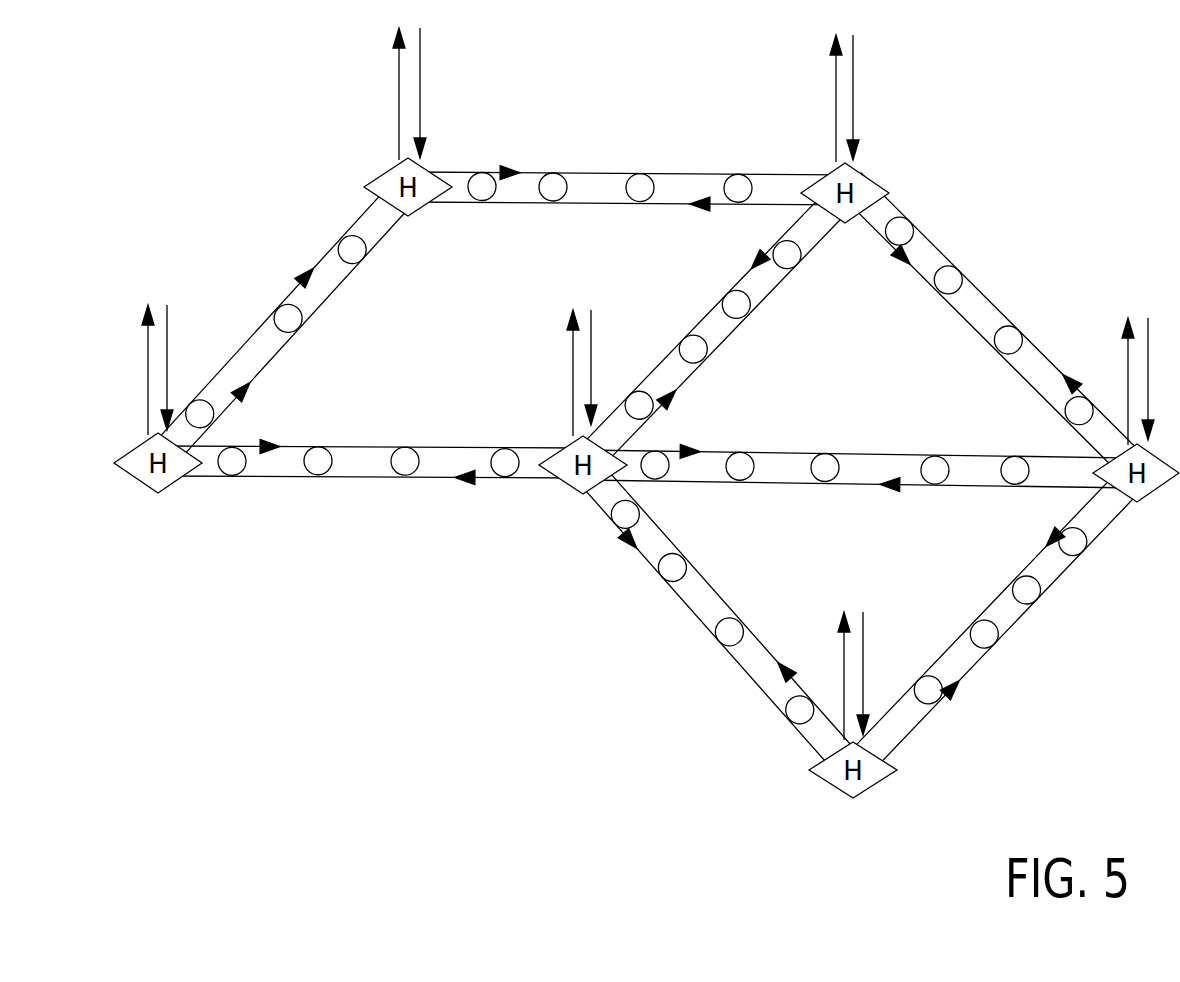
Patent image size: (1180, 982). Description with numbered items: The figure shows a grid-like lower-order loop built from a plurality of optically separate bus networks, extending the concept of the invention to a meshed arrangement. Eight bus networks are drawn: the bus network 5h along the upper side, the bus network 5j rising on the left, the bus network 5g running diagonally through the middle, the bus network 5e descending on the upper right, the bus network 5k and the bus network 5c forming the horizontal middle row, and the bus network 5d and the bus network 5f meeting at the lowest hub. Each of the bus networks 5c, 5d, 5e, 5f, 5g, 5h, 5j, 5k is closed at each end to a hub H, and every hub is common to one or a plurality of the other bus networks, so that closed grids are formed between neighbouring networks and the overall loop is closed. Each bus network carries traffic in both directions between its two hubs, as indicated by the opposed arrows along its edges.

The bus network 5h is at (580, 161).
The bus network 5j is at (289, 291).
The bus network 5g is at (711, 296).
The bus network 5e is at (972, 268).
The bus network 5k is at (366, 485).
The bus network 5c is at (808, 446).
The bus network 5d is at (673, 625).
The bus network 5f is at (1067, 585).